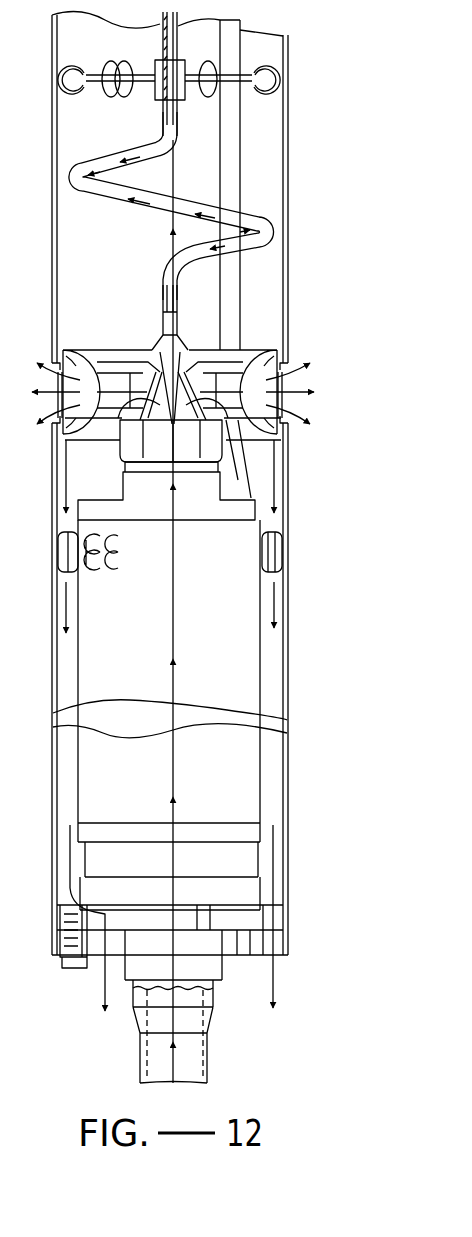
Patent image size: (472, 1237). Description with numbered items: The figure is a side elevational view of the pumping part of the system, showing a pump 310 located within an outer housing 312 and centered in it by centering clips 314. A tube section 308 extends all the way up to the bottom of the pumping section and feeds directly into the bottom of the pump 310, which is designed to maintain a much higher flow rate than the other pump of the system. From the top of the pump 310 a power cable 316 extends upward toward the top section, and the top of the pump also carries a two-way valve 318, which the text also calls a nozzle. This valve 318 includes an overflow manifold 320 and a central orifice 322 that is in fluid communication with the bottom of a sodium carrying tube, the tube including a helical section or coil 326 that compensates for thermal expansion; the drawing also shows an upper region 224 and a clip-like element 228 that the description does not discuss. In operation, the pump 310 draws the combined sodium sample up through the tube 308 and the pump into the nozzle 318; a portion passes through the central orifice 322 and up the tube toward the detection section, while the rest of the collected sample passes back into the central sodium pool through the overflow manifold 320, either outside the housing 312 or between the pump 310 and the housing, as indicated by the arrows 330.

The pump housing upper section 224 is at (250, 26).
The spring clip support bar 228 is at (119, 62).
The section (tube) 308 is at (207, 1058).
The pump 310 is at (240, 698).
The outer housing 312 is at (286, 678).
The centering clips 314 is at (280, 552).
The power cable 316 is at (232, 306).
The two-way valve 318 is at (108, 360).
The overflow manifold 320 is at (285, 372).
The central orifice 322 is at (170, 352).
The helical section or coil 326 is at (150, 203).
The arrows 330 is at (297, 404).